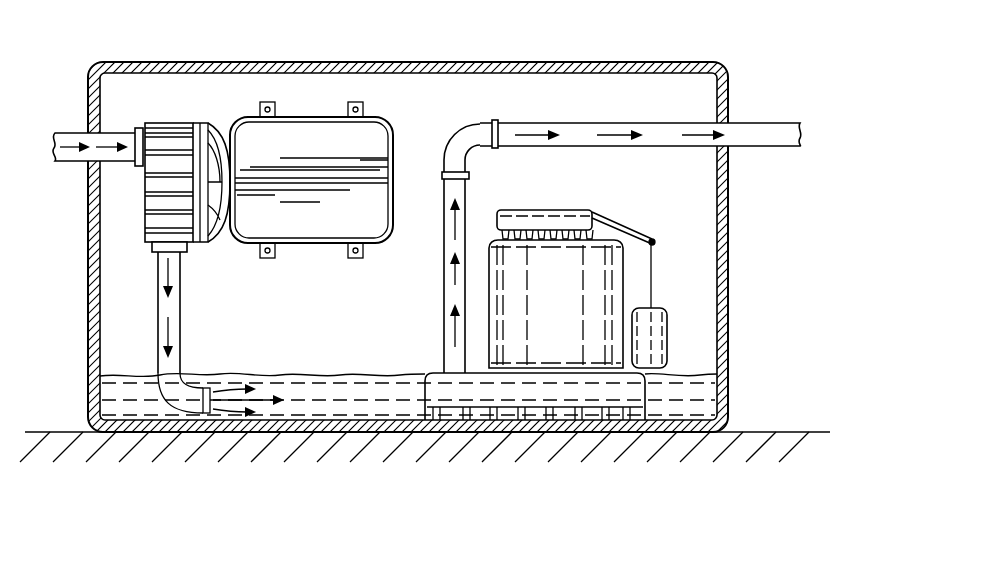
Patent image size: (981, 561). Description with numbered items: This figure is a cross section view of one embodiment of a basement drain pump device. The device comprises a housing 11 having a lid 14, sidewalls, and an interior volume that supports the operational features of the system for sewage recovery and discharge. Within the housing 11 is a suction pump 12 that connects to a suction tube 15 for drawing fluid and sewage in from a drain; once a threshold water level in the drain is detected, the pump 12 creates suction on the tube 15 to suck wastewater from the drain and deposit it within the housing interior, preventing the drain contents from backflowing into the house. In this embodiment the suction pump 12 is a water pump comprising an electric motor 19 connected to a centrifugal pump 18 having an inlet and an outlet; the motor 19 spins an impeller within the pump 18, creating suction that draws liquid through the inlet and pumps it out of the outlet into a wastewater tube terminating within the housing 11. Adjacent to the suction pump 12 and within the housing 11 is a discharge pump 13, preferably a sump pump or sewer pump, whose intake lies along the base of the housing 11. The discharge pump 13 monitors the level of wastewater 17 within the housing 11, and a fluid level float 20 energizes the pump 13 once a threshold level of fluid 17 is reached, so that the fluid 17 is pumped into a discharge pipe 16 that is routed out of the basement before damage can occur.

The housing 11 is at (729, 263).
The suction pump 12 is at (316, 87).
The discharge pump 13 is at (700, 318).
The lid 14 is at (530, 62).
The suction tube 15 is at (69, 154).
The discharge pipe 16 is at (760, 133).
The wastewater 17 is at (373, 372).
The centrifugal pump 18 is at (219, 124).
The electric motor 19 is at (365, 137).
The fluid level float 20 is at (662, 331).